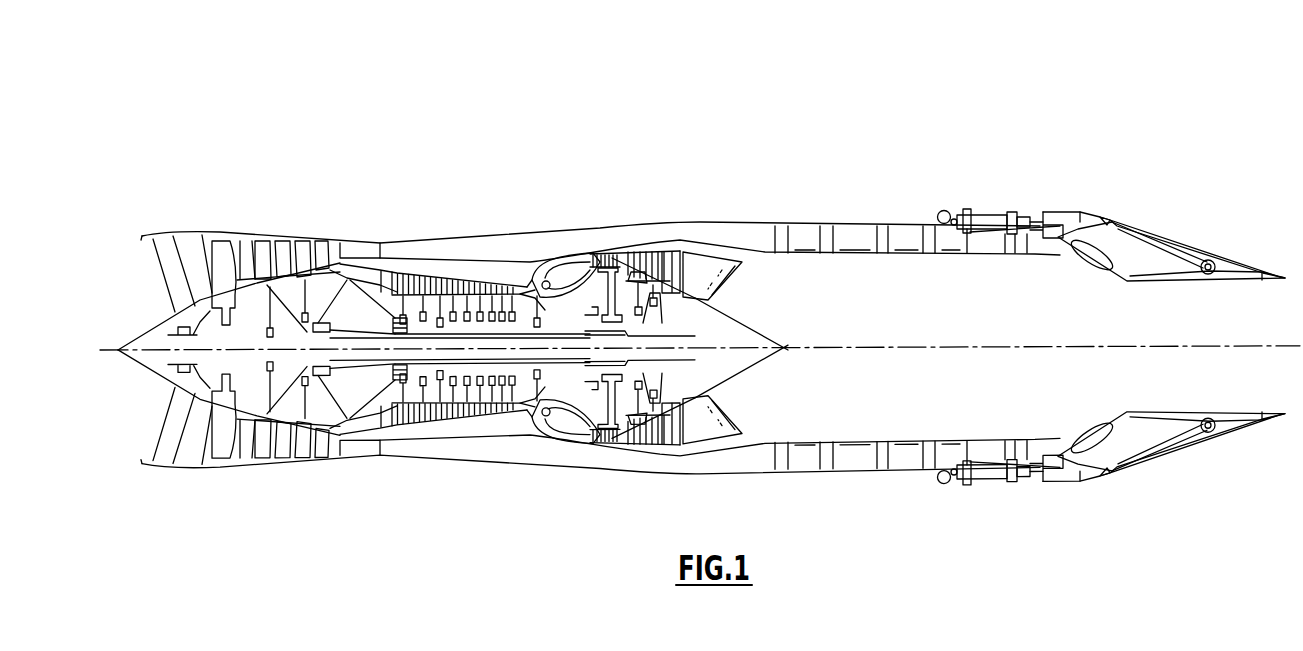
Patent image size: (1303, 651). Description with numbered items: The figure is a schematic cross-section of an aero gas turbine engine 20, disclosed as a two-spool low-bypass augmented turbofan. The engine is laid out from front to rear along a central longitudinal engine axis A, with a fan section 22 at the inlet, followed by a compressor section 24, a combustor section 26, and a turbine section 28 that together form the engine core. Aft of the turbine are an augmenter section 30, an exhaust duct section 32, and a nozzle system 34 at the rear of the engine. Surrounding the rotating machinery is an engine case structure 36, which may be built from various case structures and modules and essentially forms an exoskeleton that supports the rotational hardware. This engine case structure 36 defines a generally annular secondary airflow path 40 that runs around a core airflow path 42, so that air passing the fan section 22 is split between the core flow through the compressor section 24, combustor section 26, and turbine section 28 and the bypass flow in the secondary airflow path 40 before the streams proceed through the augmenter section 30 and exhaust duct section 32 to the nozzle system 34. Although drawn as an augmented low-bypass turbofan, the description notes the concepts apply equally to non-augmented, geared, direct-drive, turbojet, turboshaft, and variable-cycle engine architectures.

The gas turbine engine 20 is at (970, 70).
The fan section 22 is at (340, 162).
The compressor section 24 is at (542, 162).
The combustor section 26 is at (605, 162).
The turbine section 28 is at (605, 162).
The augmenter section 30 is at (677, 162).
The exhaust duct section 32 is at (1030, 162).
The nozzle system 34 is at (1278, 162).
The engine case structure 36 is at (636, 483).
The secondary airflow path 40 is at (412, 449).
The core airflow path 42 is at (348, 427).
The central longitudinal engine axis A is at (1053, 348).